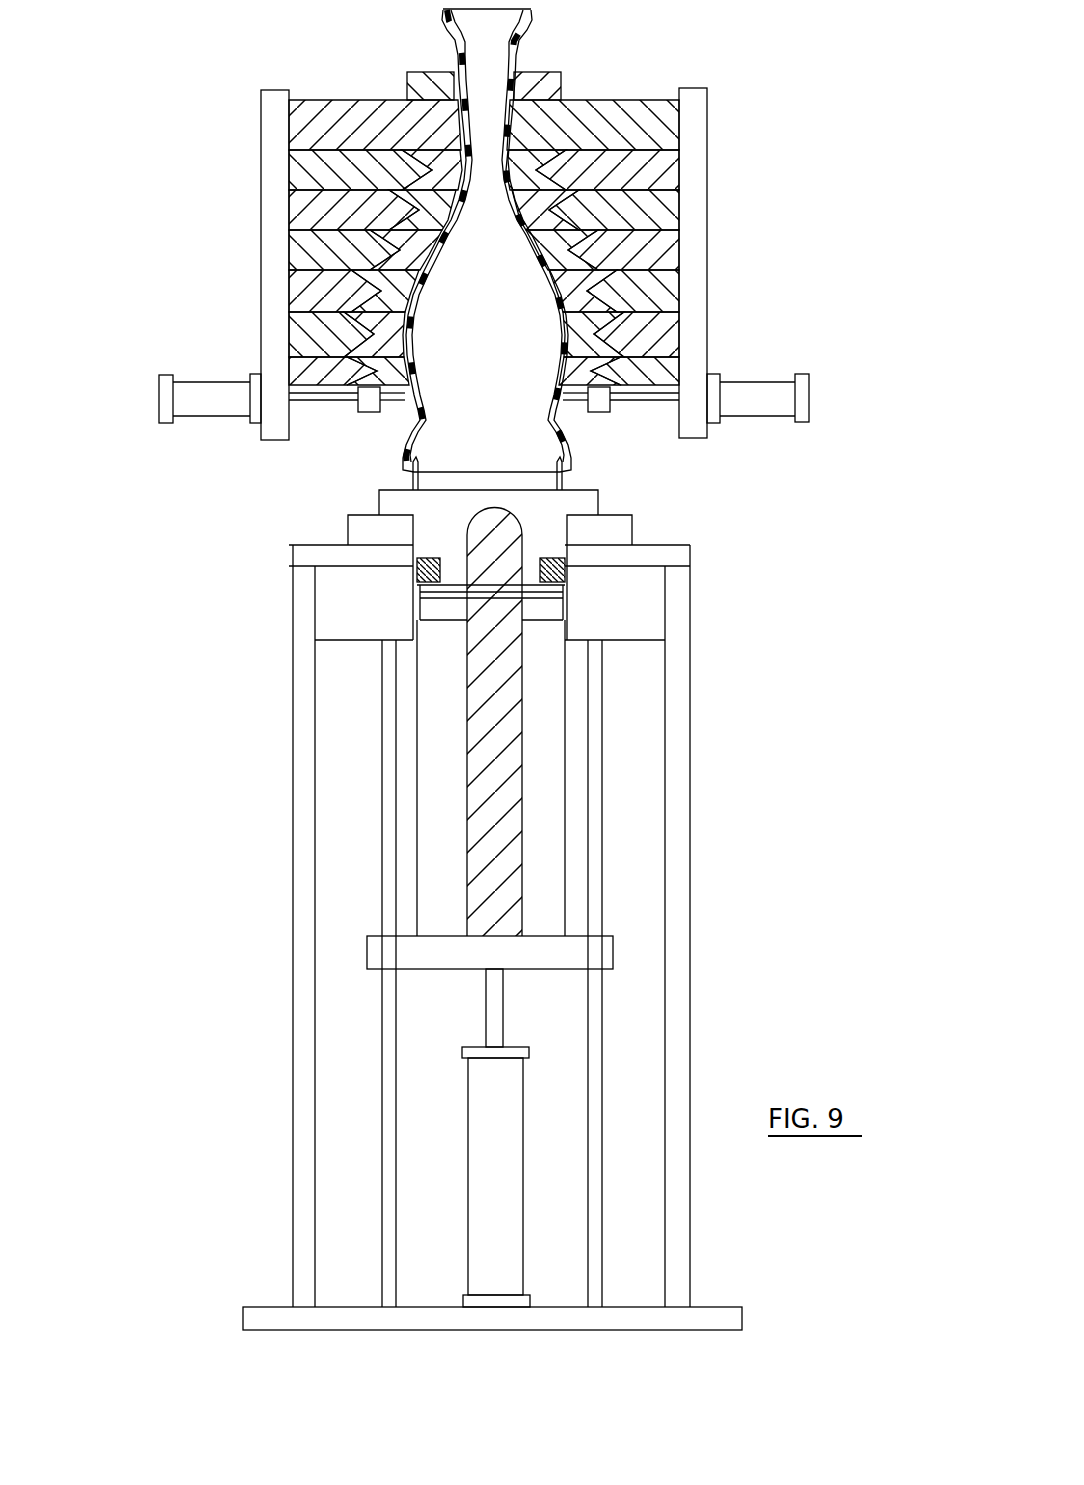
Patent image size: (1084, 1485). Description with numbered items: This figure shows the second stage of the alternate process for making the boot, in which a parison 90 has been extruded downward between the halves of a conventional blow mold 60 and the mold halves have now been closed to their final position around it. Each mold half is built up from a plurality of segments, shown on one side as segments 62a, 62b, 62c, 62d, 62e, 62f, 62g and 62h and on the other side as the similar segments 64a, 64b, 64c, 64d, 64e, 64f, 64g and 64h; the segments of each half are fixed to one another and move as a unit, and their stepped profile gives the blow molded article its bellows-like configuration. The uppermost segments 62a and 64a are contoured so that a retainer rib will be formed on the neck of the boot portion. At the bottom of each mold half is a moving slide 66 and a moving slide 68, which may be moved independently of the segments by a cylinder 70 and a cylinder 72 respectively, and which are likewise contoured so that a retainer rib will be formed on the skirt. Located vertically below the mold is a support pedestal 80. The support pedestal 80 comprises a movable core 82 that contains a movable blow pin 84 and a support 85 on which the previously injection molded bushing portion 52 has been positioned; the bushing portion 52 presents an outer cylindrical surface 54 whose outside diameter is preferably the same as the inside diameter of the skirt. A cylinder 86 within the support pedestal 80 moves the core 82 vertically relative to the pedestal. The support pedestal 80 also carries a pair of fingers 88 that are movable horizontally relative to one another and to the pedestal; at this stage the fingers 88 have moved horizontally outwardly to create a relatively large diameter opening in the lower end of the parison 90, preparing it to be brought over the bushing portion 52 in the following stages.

The bushing portion 52 is at (418, 548).
The outer cylindrical surface 54 is at (417, 572).
The blow mold 60 is at (266, 69).
The mold segment 62a is at (412, 87).
The mold segment 62b is at (297, 128).
The mold segment 62c is at (300, 173).
The mold segment 62d is at (300, 213).
The mold segment 62e is at (297, 250).
The mold segment 62f is at (298, 287).
The mold segment 62g is at (298, 328).
The mold segment 62h is at (300, 372).
The mold segment 64a is at (560, 90).
The mold segment 64b is at (667, 120).
The mold segment 64c is at (668, 175).
The mold segment 64d is at (668, 213).
The mold segment 64e is at (670, 253).
The mold segment 64f is at (668, 292).
The mold segment 64g is at (666, 333).
The mold segment 64h is at (665, 372).
The moving slide 66 is at (360, 413).
The moving slide 68 is at (608, 413).
The cylinder 70 is at (193, 420).
The cylinder 72 is at (780, 418).
The support pedestal 80 is at (726, 969).
The movable core 82 is at (553, 718).
The movable blow pin 84 is at (465, 677).
The support 85 is at (560, 593).
The cylinder 86 is at (515, 1185).
The fingers 88 is at (410, 482).
The parison 90 is at (517, 33).